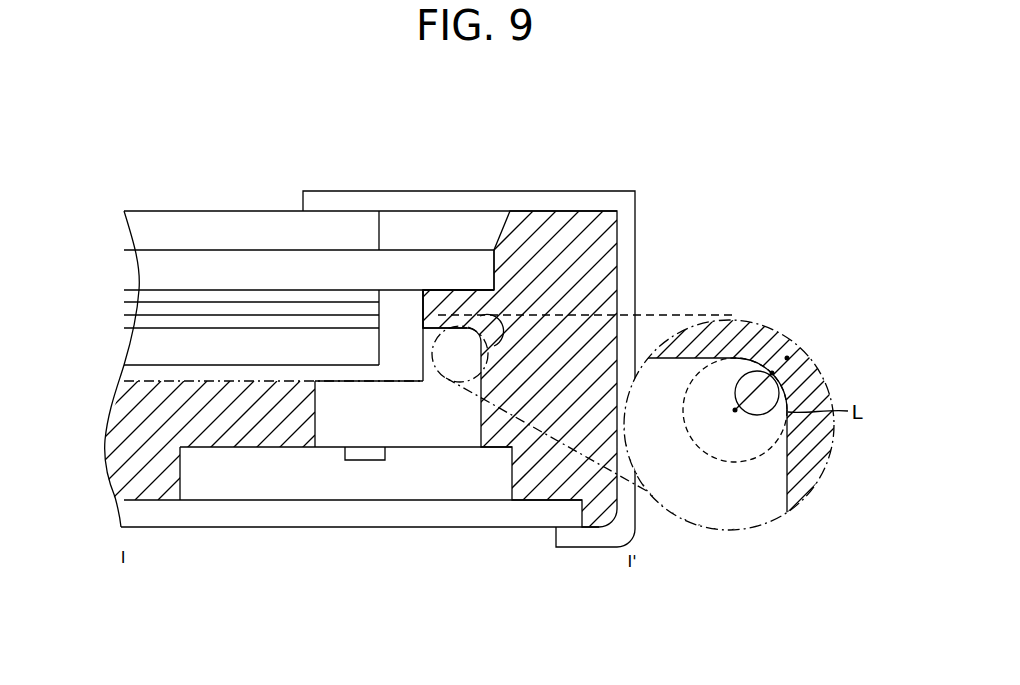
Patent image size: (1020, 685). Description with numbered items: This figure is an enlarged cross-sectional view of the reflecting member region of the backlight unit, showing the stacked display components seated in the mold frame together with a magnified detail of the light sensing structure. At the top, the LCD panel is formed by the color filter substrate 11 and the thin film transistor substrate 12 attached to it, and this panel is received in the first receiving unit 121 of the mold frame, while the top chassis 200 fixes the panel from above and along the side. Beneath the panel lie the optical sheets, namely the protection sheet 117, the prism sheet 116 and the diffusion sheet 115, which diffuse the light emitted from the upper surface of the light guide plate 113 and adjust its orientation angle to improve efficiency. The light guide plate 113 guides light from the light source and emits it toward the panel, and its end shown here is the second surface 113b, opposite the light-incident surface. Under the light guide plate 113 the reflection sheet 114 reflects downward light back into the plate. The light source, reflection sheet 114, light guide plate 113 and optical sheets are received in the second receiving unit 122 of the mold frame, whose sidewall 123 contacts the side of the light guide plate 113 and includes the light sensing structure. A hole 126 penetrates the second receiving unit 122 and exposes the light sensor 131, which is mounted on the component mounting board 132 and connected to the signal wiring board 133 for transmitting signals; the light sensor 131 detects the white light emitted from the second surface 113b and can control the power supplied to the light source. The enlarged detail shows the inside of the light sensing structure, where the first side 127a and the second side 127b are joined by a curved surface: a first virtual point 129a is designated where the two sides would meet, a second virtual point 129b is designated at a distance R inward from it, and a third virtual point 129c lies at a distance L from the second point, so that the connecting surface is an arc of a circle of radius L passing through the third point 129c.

The color filter substrate 11 is at (138, 230).
The thin film transistor substrate 12 is at (138, 258).
The protection sheet 117 is at (139, 290).
The prism sheet 116 is at (139, 303).
The diffusion sheet 115 is at (137, 322).
The light guide plate 113 is at (133, 345).
The second surface 113b is at (379, 352).
The reflection sheet 114 is at (128, 370).
The first receiving unit 121 is at (458, 300).
The second receiving unit 122 is at (120, 440).
The sidewall 123 is at (555, 218).
The hole 126 is at (328, 440).
The first side 127a is at (683, 356).
The second side 127b is at (805, 452).
The first virtual point 129a is at (787, 355).
The second virtual point 129b is at (735, 410).
The third virtual point 129c is at (782, 372).
The light sensor 131 is at (370, 460).
The component mounting board 132 is at (213, 490).
The signal wiring board 133 is at (520, 520).
The top chassis 200 is at (637, 236).